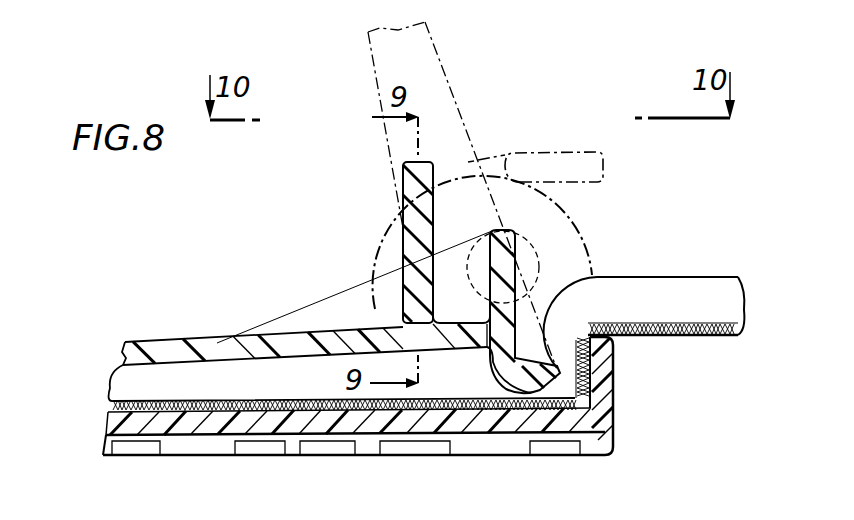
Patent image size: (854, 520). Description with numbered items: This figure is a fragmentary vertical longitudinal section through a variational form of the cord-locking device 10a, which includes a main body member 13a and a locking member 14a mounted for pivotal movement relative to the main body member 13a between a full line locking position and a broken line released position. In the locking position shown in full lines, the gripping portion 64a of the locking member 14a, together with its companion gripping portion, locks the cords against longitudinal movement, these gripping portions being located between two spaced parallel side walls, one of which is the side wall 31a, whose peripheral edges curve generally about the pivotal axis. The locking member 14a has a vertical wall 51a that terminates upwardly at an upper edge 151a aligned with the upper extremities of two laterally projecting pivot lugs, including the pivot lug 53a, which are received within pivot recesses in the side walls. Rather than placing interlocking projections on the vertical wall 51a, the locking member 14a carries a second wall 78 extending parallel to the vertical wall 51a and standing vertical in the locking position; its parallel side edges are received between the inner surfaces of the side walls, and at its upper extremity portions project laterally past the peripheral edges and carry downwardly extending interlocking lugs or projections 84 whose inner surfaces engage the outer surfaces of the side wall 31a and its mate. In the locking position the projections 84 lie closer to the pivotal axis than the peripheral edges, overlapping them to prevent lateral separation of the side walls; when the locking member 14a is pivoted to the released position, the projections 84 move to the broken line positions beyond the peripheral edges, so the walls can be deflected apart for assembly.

The device 10a is at (327, 270).
The locking member 14a is at (210, 352).
The second wall 78 is at (417, 232).
The upper edge 151a is at (511, 240).
The interlocking lugs or projections 84 is at (540, 152).
The side wall 31a is at (541, 205).
The pivot lug 53a is at (527, 247).
The vertical wall 51a is at (437, 308).
The main body member 13a is at (448, 422).
The gripping portion 64a is at (546, 368).